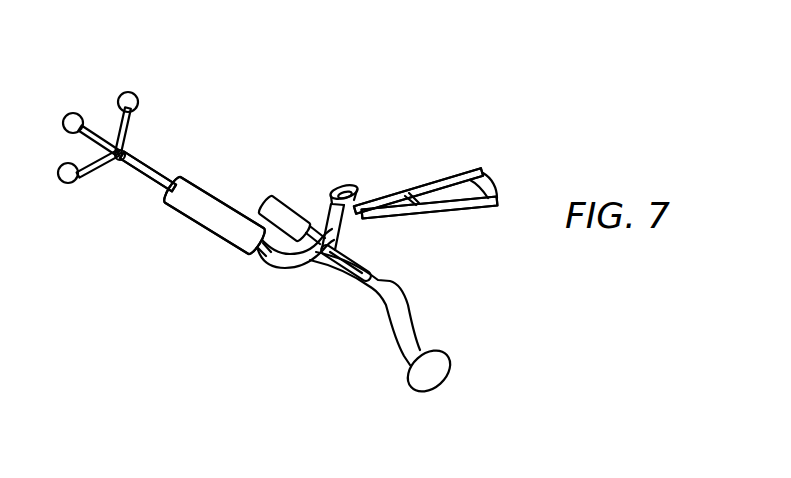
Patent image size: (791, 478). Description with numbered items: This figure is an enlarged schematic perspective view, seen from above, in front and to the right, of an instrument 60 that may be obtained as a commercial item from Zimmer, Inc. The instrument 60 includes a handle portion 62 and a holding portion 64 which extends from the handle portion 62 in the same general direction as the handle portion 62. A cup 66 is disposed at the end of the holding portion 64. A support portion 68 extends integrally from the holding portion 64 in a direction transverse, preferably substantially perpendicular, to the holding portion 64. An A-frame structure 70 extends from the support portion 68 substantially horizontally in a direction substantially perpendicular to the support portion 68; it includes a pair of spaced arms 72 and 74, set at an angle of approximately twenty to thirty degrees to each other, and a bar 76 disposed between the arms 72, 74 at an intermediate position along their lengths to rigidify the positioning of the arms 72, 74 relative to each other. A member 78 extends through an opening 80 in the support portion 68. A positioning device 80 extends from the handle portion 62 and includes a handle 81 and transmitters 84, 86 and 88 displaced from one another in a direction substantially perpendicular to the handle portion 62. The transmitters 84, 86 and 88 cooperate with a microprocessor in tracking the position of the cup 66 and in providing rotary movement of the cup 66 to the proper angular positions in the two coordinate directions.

The instrument 60 is at (437, 303).
The handle portion 62 is at (228, 233).
The holding portion 64 is at (388, 292).
The cup 66 is at (442, 374).
The support portion 68 is at (343, 230).
The A-frame structure 70 is at (414, 166).
The arm 72 is at (463, 170).
The arm 74 is at (470, 208).
The bar 76 is at (482, 180).
The member 78 is at (282, 212).
The positioning device 80 is at (176, 164).
The handle 81 is at (141, 173).
The transmitter 84 is at (67, 186).
The transmitter 86 is at (84, 117).
The transmitter 88 is at (132, 96).